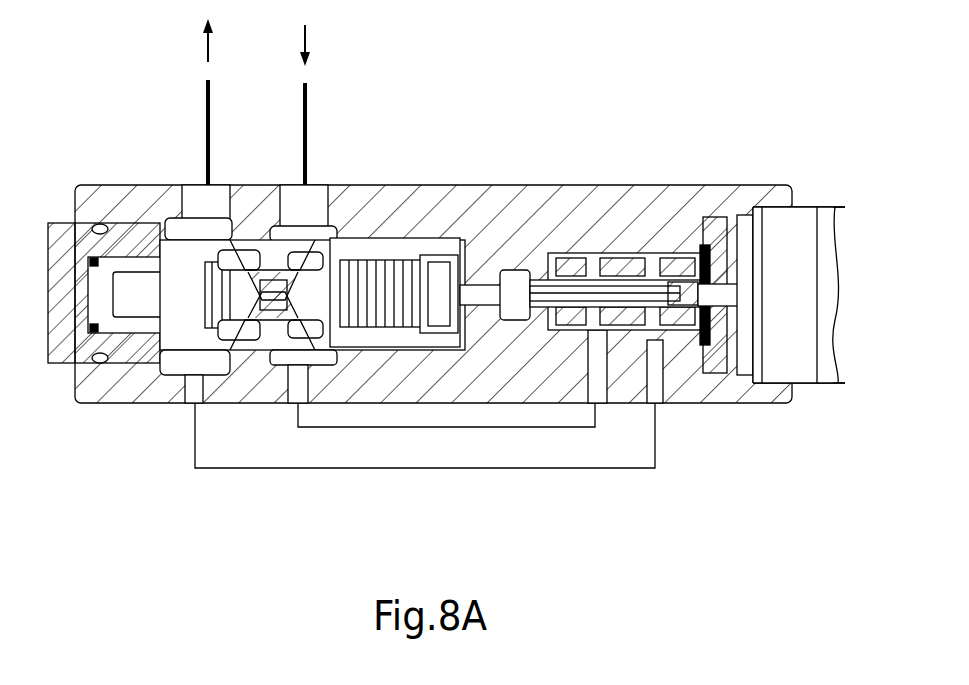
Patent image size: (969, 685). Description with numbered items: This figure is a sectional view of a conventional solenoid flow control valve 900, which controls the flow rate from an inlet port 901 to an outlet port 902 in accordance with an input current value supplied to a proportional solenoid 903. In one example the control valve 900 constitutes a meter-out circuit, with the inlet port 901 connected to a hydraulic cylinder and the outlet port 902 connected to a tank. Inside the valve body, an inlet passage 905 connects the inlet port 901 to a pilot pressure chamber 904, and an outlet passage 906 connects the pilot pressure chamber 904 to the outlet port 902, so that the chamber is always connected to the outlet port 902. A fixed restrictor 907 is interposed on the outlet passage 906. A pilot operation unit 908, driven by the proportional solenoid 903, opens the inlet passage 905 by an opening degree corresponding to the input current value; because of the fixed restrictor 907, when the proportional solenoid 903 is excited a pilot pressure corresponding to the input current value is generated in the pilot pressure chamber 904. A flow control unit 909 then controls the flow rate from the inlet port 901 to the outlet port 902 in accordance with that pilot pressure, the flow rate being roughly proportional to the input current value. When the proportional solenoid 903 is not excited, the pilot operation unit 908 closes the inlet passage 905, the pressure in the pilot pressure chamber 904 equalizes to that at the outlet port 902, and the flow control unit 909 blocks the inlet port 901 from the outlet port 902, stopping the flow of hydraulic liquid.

The solenoid flow control valve 900 is at (776, 144).
The inlet port 901 is at (318, 195).
The outlet port 902 is at (195, 197).
The proportional solenoid 903 is at (810, 385).
The pilot pressure chamber 904 is at (513, 287).
The inlet passage 905 is at (533, 428).
The outlet passage 906 is at (620, 472).
The fixed restrictor 907 is at (668, 270).
The pilot operation unit 908 is at (688, 345).
The flow control unit 909 is at (140, 393).